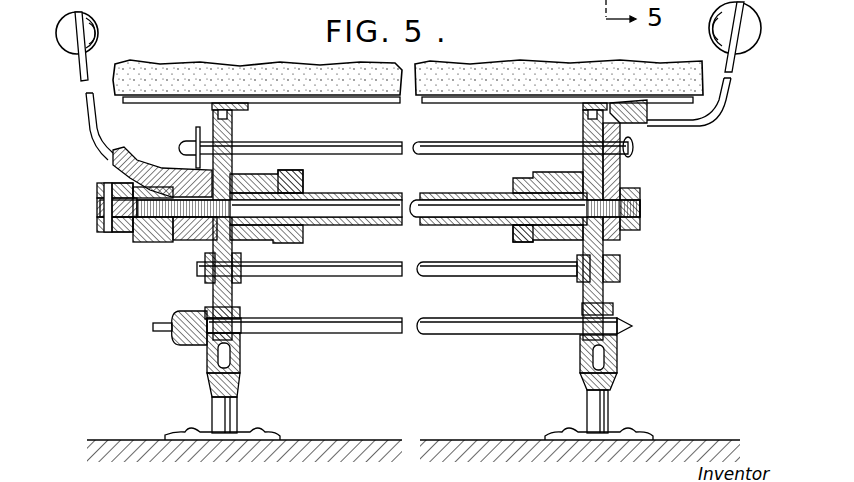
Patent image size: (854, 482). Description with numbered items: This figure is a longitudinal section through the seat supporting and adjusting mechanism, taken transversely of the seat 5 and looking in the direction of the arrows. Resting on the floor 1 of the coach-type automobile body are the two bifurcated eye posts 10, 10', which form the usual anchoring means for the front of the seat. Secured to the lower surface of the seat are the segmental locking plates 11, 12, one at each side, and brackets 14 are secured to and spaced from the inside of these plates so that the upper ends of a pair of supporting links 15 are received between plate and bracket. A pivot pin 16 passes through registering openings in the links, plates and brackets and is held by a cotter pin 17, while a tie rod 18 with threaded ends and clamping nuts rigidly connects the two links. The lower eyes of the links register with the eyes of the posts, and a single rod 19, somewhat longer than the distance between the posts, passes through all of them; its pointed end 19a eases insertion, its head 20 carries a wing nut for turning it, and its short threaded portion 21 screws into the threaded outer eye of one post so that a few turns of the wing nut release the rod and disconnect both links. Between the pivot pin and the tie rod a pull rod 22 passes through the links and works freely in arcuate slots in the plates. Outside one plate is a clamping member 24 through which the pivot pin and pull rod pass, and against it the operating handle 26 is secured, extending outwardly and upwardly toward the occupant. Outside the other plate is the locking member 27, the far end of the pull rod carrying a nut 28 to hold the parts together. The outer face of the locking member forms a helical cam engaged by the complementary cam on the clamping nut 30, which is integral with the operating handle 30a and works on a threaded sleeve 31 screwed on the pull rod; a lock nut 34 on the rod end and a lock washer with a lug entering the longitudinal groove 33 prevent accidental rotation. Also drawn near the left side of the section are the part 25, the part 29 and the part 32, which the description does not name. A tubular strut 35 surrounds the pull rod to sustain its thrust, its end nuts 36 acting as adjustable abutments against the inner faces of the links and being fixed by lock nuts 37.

The floor 1 is at (370, 442).
The seat 5 is at (238, 76).
The double eye post 10 is at (226, 386).
The double eye post 10' is at (610, 387).
The segmental locking plate 11 is at (212, 104).
The segmental locking plate 12 is at (608, 106).
The bracket 14 is at (234, 120).
The supporting link 15 is at (234, 302).
The pivot pin 16 is at (445, 146).
The cotter pin 17 is at (195, 140).
The tie rod 18 is at (452, 276).
The rod 19 is at (466, 334).
The pointed end 19a is at (634, 326).
The head 20 is at (175, 345).
The threaded portion 21 is at (205, 338).
The pull rod 22 is at (400, 200).
The clamping member 24 is at (622, 173).
The pin 25 is at (194, 147).
The operating handle 26 is at (707, 122).
The locking member 27 is at (190, 242).
The nut 28 is at (641, 226).
The lever hub 29 is at (188, 172).
The clamping nut 30 is at (153, 243).
The operating handle 30a is at (90, 112).
The threaded sleeve 31 is at (122, 234).
The washer 32 is at (110, 234).
The longitudinal groove 33 is at (97, 195).
The lock nut 34 is at (97, 228).
The tubular strut 35 is at (462, 198).
The threaded nut 36 is at (262, 178).
The lock nut 37 is at (303, 182).